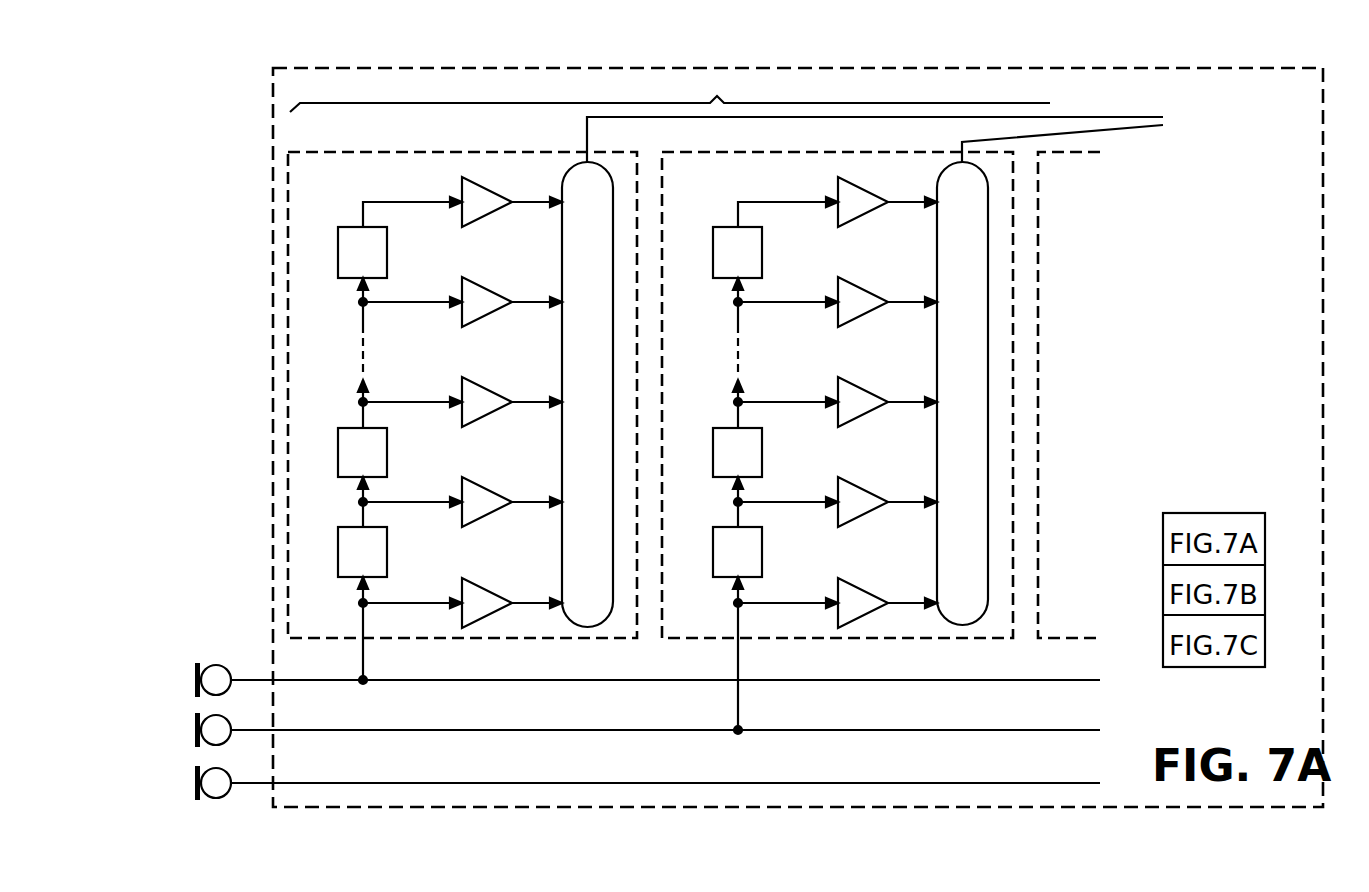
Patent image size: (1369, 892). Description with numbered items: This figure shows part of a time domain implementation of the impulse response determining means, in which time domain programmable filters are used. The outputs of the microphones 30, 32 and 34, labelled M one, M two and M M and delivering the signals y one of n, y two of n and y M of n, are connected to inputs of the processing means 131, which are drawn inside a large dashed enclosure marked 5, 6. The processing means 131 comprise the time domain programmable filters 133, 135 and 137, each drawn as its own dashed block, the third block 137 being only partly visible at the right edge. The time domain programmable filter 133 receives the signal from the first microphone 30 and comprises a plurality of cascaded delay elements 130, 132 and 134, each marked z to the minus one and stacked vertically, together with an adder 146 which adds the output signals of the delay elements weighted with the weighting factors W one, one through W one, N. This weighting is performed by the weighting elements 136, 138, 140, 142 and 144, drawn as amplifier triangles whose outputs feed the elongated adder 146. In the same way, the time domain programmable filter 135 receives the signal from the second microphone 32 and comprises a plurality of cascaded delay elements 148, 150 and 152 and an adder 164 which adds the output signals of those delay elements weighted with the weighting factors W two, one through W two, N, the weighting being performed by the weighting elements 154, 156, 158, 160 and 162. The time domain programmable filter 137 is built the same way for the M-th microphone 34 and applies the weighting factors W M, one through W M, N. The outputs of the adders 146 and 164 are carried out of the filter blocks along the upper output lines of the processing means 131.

The beamformer / adaptive filter unit 5 is at (771, 437).
The beamformer / adaptive filter unit 6 is at (273, 328).
The microphone 30 is at (195, 680).
The microphone 32 is at (195, 730).
The microphone 34 is at (195, 783).
The delay element 130 is at (337, 553).
The processing means 131 is at (717, 96).
The delay element 132 is at (337, 455).
The time domain programmable filter 133 is at (360, 151).
The delay element 134 is at (337, 252).
The time domain programmable filter 135 is at (735, 151).
The weighting element 136 is at (460, 186).
The time domain programmable filter 137 is at (1040, 228).
The weighting element 138 is at (460, 320).
The weighting element 140 is at (460, 385).
The weighting element 142 is at (460, 520).
The weighting element 144 is at (460, 586).
The adder 146 is at (562, 245).
The delay element 148 is at (712, 553).
The delay element 150 is at (712, 455).
The delay element 152 is at (712, 252).
The weighting element 154 is at (836, 186).
The weighting element 156 is at (836, 320).
The weighting element 158 is at (836, 385).
The weighting element 160 is at (836, 520).
The weighting element 162 is at (836, 586).
The adder 164 is at (937, 245).